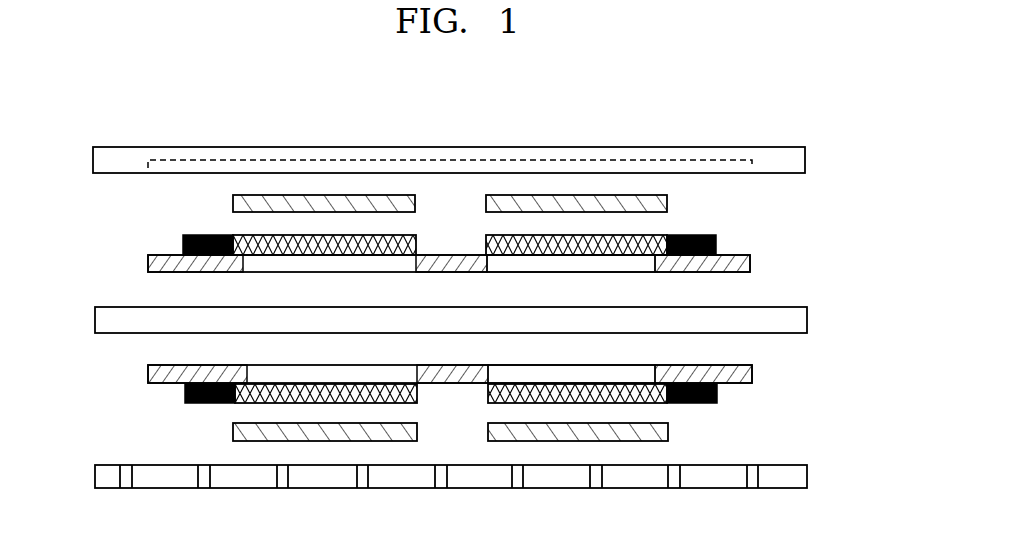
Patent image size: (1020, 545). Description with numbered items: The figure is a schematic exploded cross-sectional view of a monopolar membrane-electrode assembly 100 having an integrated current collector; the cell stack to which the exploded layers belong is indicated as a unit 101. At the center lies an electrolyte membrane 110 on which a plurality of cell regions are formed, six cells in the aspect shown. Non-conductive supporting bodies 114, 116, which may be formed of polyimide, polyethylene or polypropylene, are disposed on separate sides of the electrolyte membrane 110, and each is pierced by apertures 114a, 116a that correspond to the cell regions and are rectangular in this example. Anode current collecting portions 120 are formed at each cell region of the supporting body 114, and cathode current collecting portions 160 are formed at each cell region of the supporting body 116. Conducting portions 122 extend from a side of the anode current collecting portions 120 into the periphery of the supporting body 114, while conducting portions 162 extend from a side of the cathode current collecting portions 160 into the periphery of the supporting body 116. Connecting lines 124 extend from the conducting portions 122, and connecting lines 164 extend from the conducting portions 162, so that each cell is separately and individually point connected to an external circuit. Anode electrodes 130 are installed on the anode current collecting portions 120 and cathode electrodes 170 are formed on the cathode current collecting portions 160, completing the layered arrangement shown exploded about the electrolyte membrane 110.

The monopolar membrane-electrode assembly 100 is at (193, 96).
The liquid crystal cell 101 is at (826, 230).
The electrolyte membrane 110 is at (800, 318).
The supporting body 114 is at (750, 256).
The aperture 114a is at (608, 263).
The supporting body 116 is at (752, 377).
The aperture 116a is at (630, 368).
The anode current collecting portion 120 is at (253, 235).
The conducting portion 122 is at (183, 245).
The connecting line 124 is at (208, 245).
The anode electrode 130 is at (643, 207).
The cathode current collecting portion 160 is at (238, 401).
The conducting portion 162 is at (185, 394).
The connecting line 164 is at (210, 393).
The cathode electrode 170 is at (655, 432).